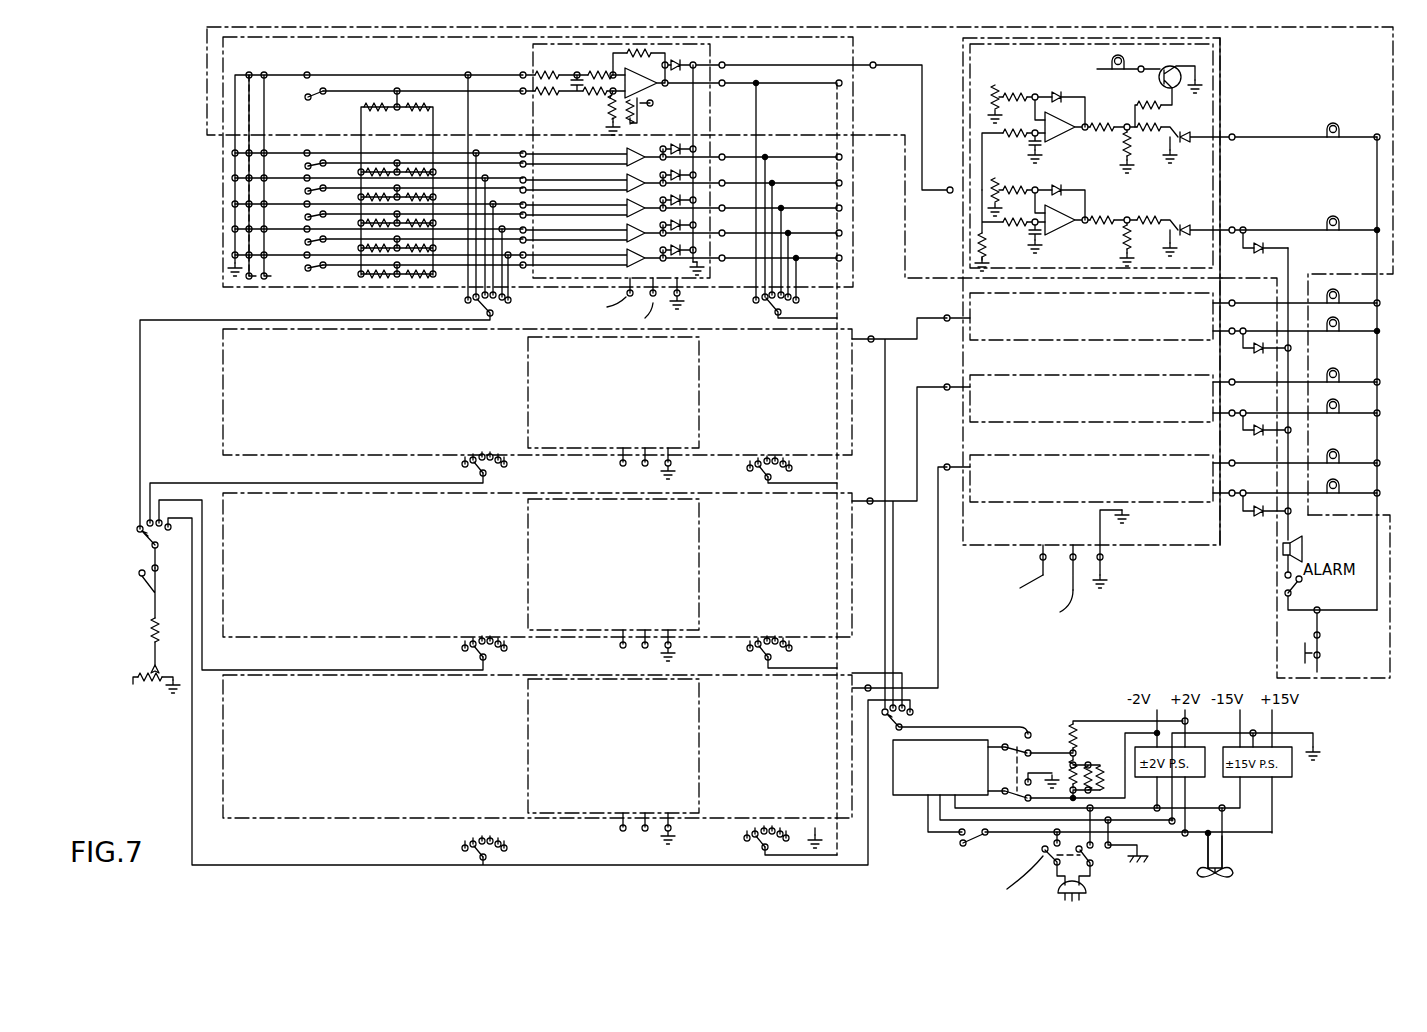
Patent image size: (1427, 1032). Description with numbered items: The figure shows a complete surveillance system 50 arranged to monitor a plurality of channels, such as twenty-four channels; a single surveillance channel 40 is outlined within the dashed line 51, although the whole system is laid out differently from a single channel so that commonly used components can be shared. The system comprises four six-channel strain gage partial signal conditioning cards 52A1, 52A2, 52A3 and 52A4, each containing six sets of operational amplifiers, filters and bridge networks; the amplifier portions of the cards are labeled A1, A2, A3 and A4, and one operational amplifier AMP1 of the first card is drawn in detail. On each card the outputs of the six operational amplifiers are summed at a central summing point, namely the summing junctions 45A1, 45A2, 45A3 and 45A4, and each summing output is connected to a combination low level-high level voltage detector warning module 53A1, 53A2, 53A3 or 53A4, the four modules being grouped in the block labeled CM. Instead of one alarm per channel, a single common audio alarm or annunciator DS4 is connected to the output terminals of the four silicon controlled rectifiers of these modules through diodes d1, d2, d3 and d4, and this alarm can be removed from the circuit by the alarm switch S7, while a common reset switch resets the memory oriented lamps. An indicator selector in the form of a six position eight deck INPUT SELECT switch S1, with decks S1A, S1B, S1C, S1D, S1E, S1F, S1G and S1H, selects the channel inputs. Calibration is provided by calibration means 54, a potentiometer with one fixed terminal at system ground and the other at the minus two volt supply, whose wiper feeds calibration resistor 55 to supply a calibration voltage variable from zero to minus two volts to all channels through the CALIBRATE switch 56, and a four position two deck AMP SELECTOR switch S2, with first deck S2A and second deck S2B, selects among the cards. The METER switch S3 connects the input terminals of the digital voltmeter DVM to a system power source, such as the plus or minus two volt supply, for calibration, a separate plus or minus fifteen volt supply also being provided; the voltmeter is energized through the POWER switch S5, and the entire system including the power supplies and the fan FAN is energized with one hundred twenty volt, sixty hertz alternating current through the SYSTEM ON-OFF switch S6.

The complete surveillance system 50 is at (152, 193).
The dashed line 51 is at (207, 87).
The single surveillance channel 40 is at (1277, 625).
The six-channel strain gage partial signal conditioning card 52A1 is at (223, 265).
The six-channel strain gage partial signal conditioning card 52A2 is at (223, 371).
The six-channel strain gage partial signal conditioning card 52A3 is at (382, 640).
The six-channel strain gage partial signal conditioning card 52A4 is at (312, 820).
The first amplifier A1 is at (683, 186).
The second amplifier A2 is at (528, 381).
The third amplifier A3 is at (528, 572).
The fourth amplifier A4 is at (528, 742).
The operational amplifier AMP1 is at (608, 105).
The INPUT SELECT switch S1 is at (343, 308).
The deck of INPUT SELECT switch S1A is at (341, 300).
The deck of INPUT SELECT switch S1B is at (782, 202).
The deck of INPUT SELECT switch S1C is at (338, 487).
The deck of INPUT SELECT switch S1D is at (777, 474).
The deck of INPUT SELECT switch S1E is at (342, 586).
The deck of INPUT SELECT switch S1F is at (777, 654).
The deck of INPUT SELECT switch S1G is at (539, 691).
The deck of INPUT SELECT switch S1H is at (776, 843).
The AMP SELECTOR switch S2 is at (203, 541).
The first deck of AMP SELECTOR switch S2A is at (150, 548).
The second deck of AMP SELECTOR switch S2B is at (955, 721).
The METER switch S3 is at (1040, 732).
The POWER switch S5 is at (950, 838).
The SYSTEM ON-OFF switch S6 is at (1052, 873).
The ALARM switch S7 is at (1285, 588).
The calibration means 54 is at (152, 666).
The calibration resistor 55 is at (150, 630).
The calibration switch 56 is at (158, 584).
The central summing point 45A1 is at (876, 64).
The summing junction 45A2 is at (873, 336).
The summing junction 45A3 is at (866, 504).
The summing junction 45A4 is at (864, 690).
The low level-high level voltage detector warning module 53A1 is at (1215, 67).
The low level-high level voltage detector warning module 53A2 is at (1118, 328).
The low level-high level voltage detector warning module 53A3 is at (1118, 410).
The low level-high level voltage detector warning module 53A4 is at (1118, 490).
The comparator module CM is at (1200, 545).
The diode d1 is at (1262, 252).
The diode d2 is at (1262, 352).
The diode d3 is at (1262, 434).
The diode d4 is at (1262, 515).
The common audio alarm or annunciator DS4 is at (1283, 549).
The digital voltmeter DVM is at (1057, 786).
The cooling fan FAN is at (1215, 869).